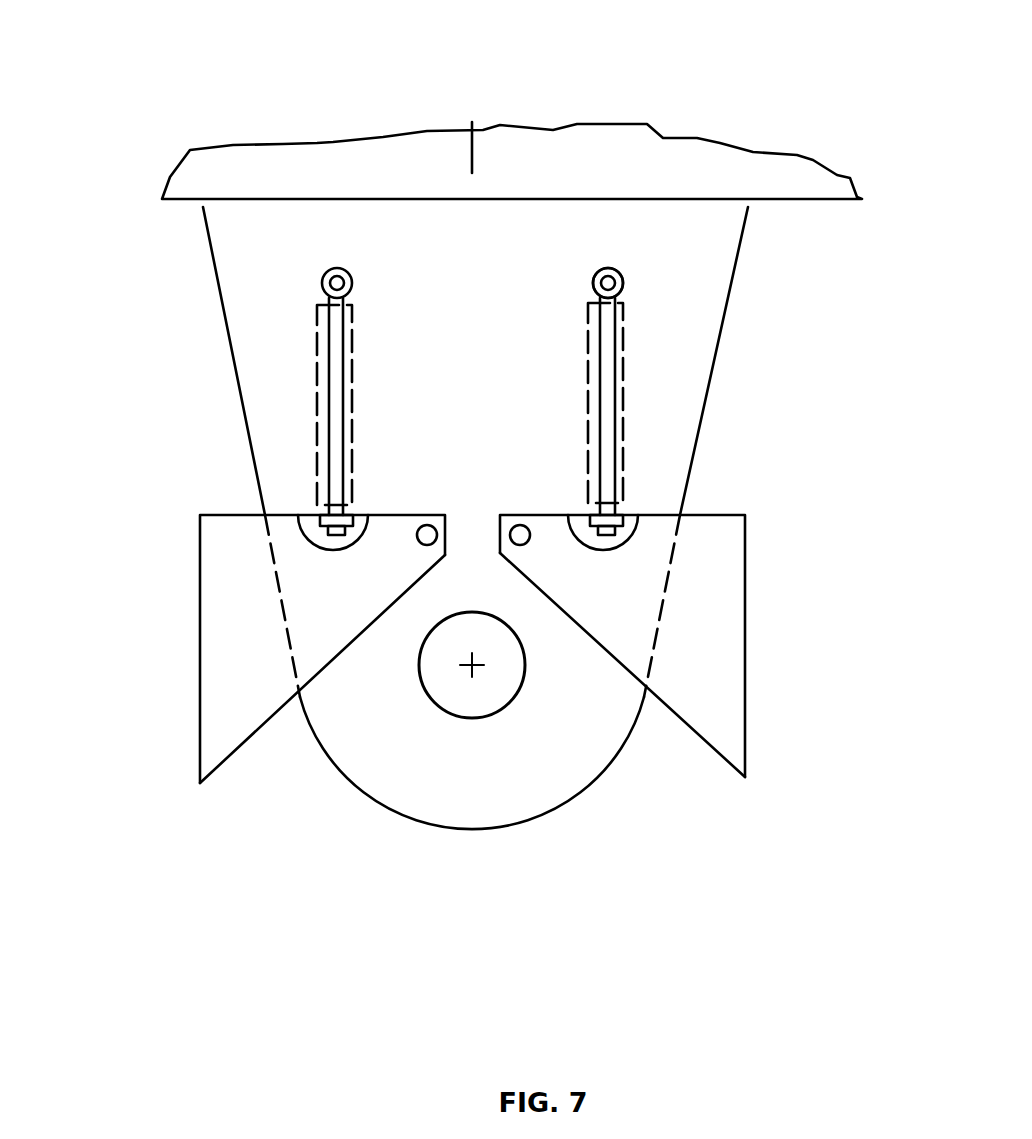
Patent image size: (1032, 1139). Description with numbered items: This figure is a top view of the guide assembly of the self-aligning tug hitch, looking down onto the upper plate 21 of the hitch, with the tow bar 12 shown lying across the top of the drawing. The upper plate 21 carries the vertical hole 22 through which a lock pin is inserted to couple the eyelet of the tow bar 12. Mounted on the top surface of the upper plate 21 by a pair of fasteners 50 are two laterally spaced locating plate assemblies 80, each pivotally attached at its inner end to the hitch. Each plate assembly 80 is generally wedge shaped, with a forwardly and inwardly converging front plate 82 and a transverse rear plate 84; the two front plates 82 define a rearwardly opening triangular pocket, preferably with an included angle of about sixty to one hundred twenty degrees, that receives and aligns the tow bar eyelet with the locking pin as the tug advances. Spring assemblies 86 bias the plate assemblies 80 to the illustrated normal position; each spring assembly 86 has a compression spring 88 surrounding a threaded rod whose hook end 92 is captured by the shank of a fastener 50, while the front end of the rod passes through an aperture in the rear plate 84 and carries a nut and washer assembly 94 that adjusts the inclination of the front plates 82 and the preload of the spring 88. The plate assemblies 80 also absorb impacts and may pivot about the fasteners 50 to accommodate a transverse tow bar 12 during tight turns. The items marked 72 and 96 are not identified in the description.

The tow bar 12 is at (787, 170).
The upper plate 21 is at (382, 802).
The holes 22 is at (502, 677).
The fasteners 50 is at (601, 282).
The lower edge of left plate 72 is at (249, 738).
The locating plate assemblies 80 is at (200, 743).
The front plates 82 is at (702, 742).
The rear plates 84 is at (705, 515).
The spring assemblies 86 is at (632, 343).
The compression spring 88 is at (588, 373).
The hook end 92 is at (612, 278).
The nut and washer assembly 94 is at (312, 547).
The right bearing mount 96 is at (638, 542).